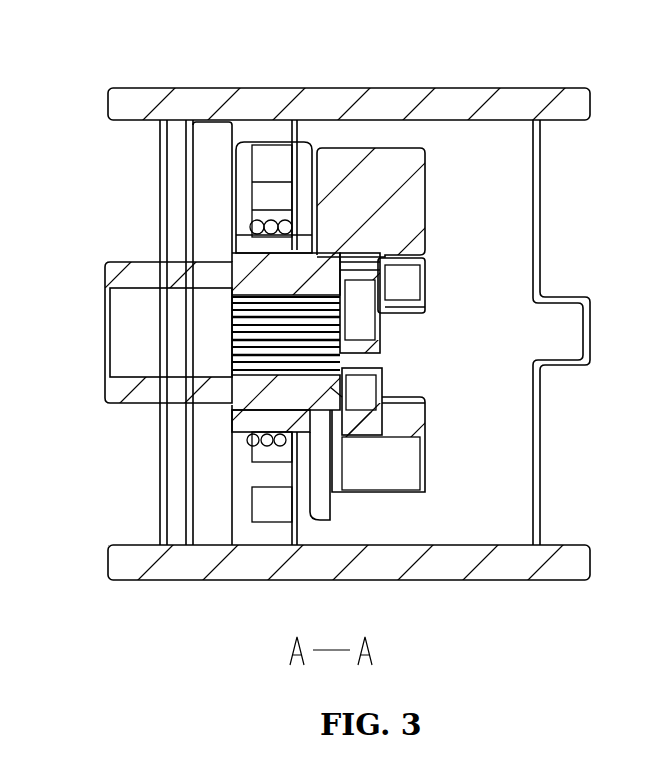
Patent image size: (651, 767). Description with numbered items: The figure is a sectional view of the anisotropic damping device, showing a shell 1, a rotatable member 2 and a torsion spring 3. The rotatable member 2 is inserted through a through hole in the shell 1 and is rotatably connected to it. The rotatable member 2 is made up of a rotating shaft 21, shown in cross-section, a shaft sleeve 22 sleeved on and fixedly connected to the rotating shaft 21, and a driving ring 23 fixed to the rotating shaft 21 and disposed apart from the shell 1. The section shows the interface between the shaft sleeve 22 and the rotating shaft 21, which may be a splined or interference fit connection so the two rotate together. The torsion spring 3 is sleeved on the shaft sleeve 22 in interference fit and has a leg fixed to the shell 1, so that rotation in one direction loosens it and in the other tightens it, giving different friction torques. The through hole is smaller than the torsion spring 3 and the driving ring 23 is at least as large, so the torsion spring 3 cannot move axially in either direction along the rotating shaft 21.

The shell 1 is at (240, 147).
The rotatable member 2 is at (58, 126).
The rotating shaft 21 is at (160, 273).
The shaft sleeve 22 is at (250, 222).
The driving ring 23 is at (340, 187).
The torsion spring 3 is at (247, 442).